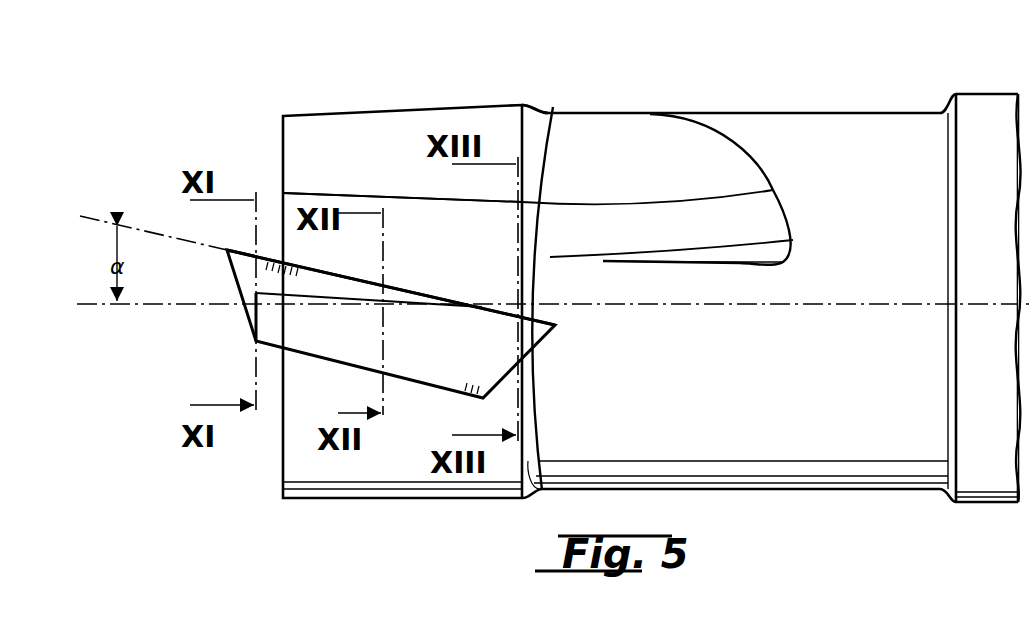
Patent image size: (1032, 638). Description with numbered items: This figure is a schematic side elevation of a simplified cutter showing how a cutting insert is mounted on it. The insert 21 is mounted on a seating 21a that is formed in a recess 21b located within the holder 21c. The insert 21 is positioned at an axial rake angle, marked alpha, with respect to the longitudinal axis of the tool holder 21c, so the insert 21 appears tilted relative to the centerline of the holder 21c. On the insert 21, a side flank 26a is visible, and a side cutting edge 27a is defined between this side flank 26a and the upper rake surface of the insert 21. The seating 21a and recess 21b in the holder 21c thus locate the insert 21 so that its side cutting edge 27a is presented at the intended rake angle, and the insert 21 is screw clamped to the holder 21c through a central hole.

The insert 21 is at (430, 288).
The seating 21a is at (323, 355).
The recess 21b is at (463, 237).
The holder 21c is at (554, 105).
The side flank 26a is at (391, 313).
The side cutting edge 27a is at (325, 272).